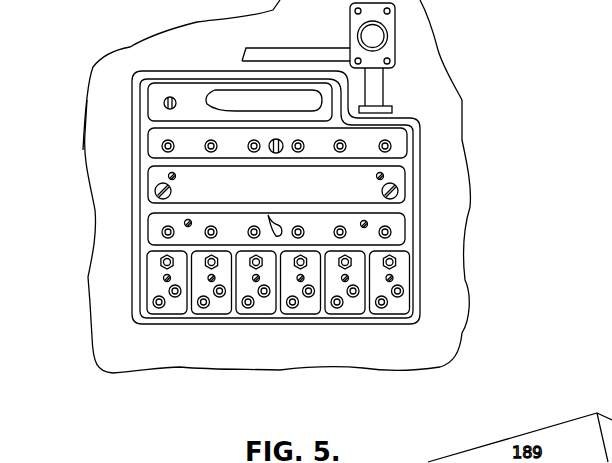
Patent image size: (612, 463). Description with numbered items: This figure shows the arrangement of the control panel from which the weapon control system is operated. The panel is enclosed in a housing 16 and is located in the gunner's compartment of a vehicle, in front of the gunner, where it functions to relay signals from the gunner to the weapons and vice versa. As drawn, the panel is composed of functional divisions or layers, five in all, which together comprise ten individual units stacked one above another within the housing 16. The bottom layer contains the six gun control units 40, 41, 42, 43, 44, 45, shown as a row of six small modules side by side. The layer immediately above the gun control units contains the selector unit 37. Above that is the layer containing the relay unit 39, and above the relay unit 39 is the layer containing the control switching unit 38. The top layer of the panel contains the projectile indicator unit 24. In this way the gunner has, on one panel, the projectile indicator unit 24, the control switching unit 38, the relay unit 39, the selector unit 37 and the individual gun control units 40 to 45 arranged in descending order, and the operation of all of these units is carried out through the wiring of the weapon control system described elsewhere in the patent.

The housing 16 is at (421, 183).
The projectile indicator unit 24 is at (152, 116).
The control switching unit 38 is at (152, 164).
The relay unit 39 is at (152, 201).
The selector unit 37 is at (152, 239).
The gun control unit 40 is at (175, 307).
The gun control unit 41 is at (212, 310).
The gun control unit 42 is at (257, 310).
The gun control unit 43 is at (308, 310).
The gun control unit 44 is at (355, 310).
The gun control unit 45 is at (385, 310).